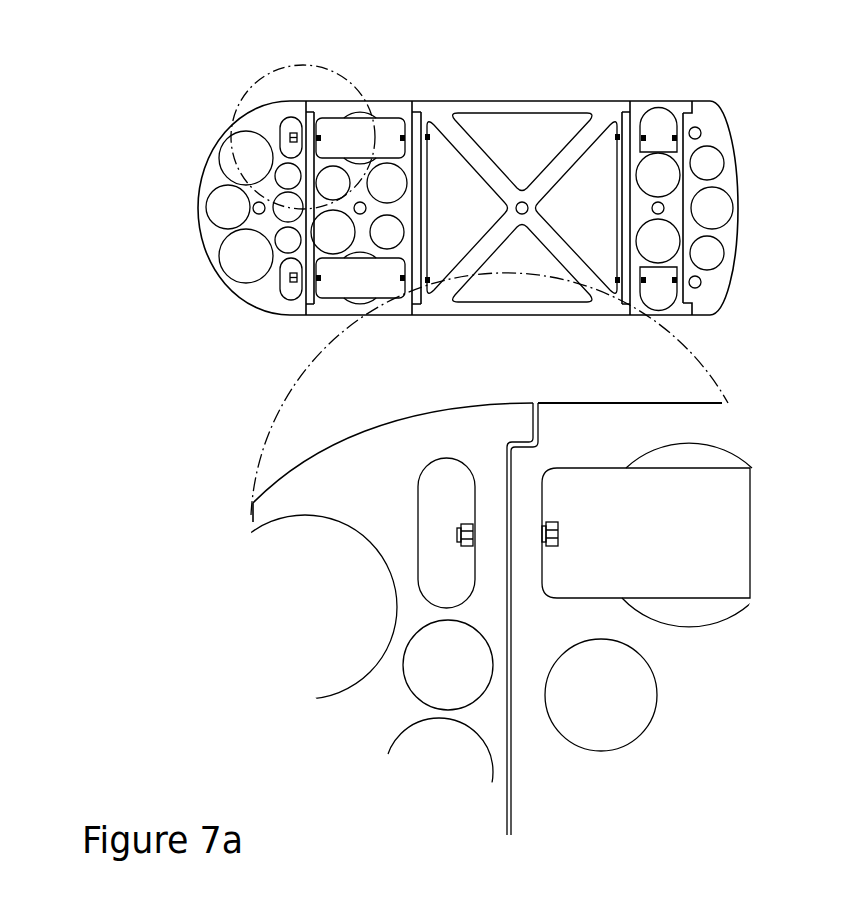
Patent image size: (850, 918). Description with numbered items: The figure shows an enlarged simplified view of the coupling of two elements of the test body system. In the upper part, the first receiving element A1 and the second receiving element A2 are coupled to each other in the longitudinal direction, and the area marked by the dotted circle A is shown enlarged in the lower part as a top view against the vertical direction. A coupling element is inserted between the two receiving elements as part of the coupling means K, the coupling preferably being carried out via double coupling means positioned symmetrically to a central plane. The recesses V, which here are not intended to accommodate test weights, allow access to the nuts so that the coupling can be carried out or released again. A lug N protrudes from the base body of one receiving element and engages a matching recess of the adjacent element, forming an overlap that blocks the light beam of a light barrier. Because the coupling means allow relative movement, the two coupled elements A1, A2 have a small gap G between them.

The dotted circle A is at (309, 121).
The recess V is at (430, 527).
The lug N is at (517, 428).
The coupling means K is at (580, 535).
The first receiving element A1 is at (285, 492).
The second receiving element A2 is at (682, 682).
The gap G is at (513, 820).